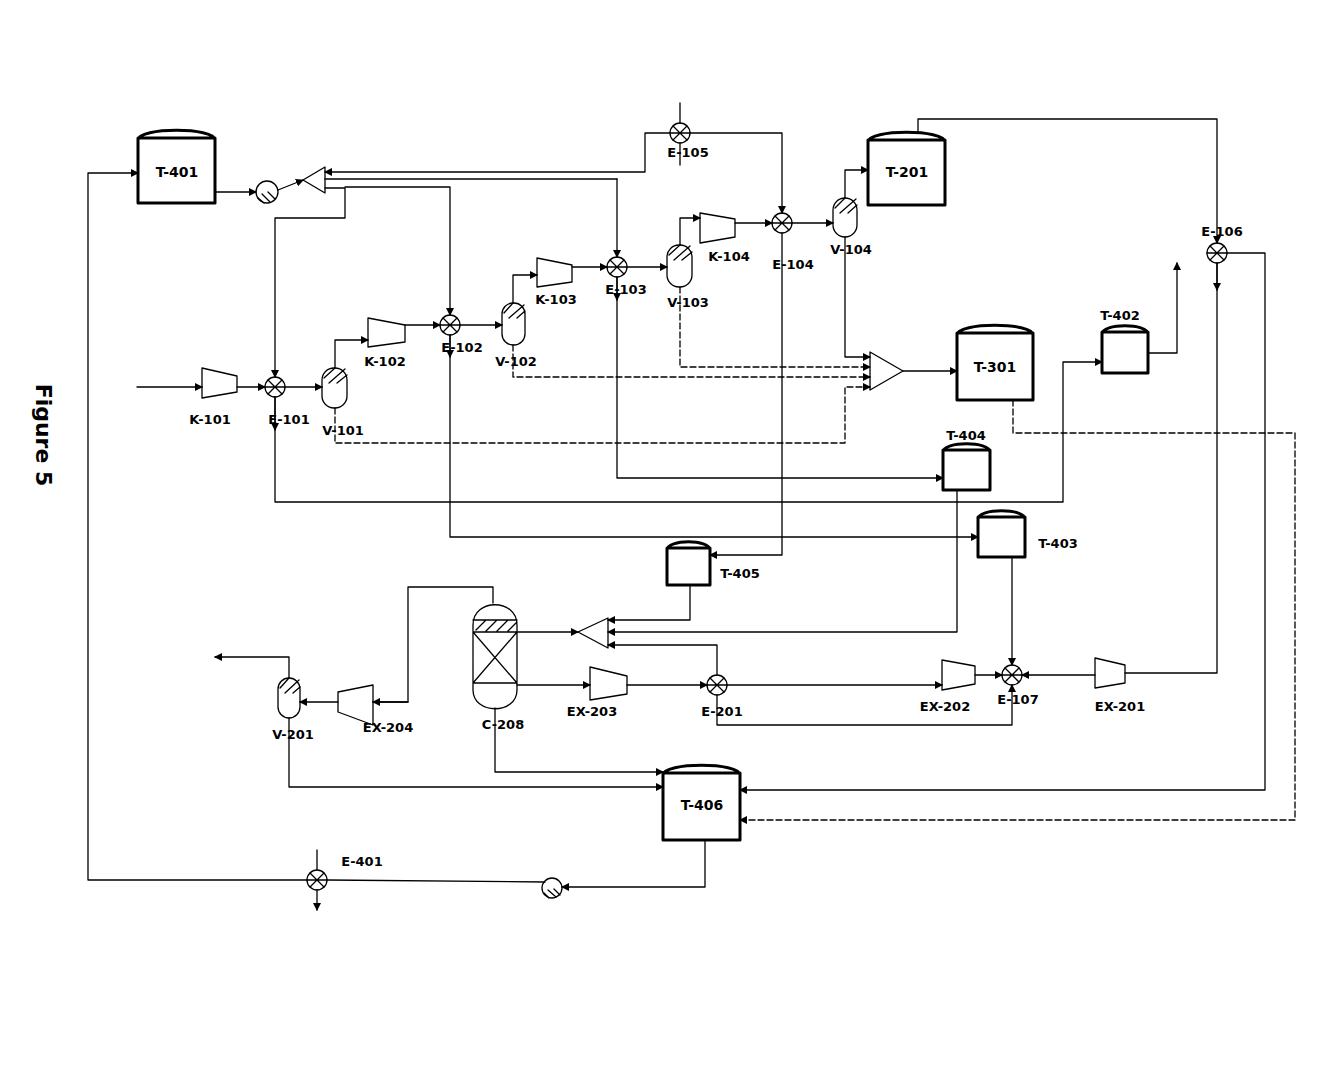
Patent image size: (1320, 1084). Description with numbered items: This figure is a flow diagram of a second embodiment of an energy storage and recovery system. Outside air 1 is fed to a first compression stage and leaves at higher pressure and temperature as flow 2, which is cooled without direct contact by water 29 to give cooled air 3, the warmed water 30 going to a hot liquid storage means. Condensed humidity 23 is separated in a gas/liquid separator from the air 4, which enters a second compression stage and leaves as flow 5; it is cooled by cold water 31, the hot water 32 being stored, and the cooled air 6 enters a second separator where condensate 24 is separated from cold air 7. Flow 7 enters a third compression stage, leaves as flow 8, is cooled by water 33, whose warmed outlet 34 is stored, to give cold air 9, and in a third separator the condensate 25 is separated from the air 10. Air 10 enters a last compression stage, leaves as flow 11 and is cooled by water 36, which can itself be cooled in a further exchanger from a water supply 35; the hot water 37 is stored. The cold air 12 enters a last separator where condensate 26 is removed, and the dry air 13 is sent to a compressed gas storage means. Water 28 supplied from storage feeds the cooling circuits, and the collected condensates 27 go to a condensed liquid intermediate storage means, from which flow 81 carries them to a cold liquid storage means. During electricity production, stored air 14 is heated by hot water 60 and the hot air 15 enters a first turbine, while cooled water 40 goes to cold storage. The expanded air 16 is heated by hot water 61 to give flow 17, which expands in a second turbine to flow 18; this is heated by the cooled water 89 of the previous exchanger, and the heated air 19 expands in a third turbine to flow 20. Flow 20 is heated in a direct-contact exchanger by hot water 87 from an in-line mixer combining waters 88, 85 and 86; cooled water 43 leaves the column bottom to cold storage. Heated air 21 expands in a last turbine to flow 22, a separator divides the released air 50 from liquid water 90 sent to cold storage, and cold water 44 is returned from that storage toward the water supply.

The outside air flow 1 is at (177, 387).
The compressed air flow 2 is at (248, 387).
The cooled air flow 3 is at (302, 387).
The separated air flow 4 is at (348, 340).
The compressed air flow 5 is at (423, 325).
The cooled air flow 6 is at (483, 325).
The cold air flow 7 is at (516, 275).
The compressed air flow 8 is at (588, 267).
The cooled stream from E-103 to V-103 9 is at (648, 267).
The cold air flow 10 is at (687, 218).
The compressed air flow 11 is at (753, 223).
The cold air flow 12 is at (808, 223).
The dry cold air flow 13 is at (847, 170).
The stored air flow 14 is at (1105, 119).
The hot air flow 15 is at (1217, 533).
The expanded air flow 16 is at (1063, 675).
The heated air flow 17 is at (987, 675).
The expanded air flow 18 is at (895, 685).
The heated air flow 19 is at (662, 685).
The cold expanded air flow 20 is at (568, 685).
The heated air flow 21 is at (468, 587).
The expanded air flow 22 is at (322, 702).
The condensed humidity flow 23 is at (393, 443).
The condensed humidity flow 24 is at (568, 377).
The condensed humidity flow 25 is at (752, 367).
The condensed humidity flow 26 is at (845, 295).
The mixed liquid stream to T-301 27 is at (922, 371).
The stream from T-401 to mixer 28 is at (245, 192).
The cooling water flow 29 is at (275, 263).
The hot water flow 30 is at (275, 485).
The cold water flow 31 is at (450, 227).
The hot water flow 32 is at (450, 382).
The cold water flow 33 is at (617, 200).
The hot water flow 34 is at (617, 420).
The stream from E-105 to splitter 35 is at (542, 172).
The cold water flow 36 is at (743, 133).
The hot water flow 37 is at (782, 408).
The cooled water flow 40 is at (1080, 790).
The cooled water flow 43 is at (495, 763).
The stream from T-406 through E-401 to T-401 44 is at (277, 880).
The released air flow 50 is at (245, 657).
The hot water flow 60 is at (1170, 353).
The hot water flow 61 is at (1012, 595).
The condensation water flow 81 is at (1287, 433).
The hot water flow 85 is at (910, 632).
The hot water flow 86 is at (652, 620).
The mixed hot water flow 87 is at (538, 632).
The hot water flow 88 is at (717, 665).
The cooled water flow 89 is at (935, 725).
The liquid water flow 90 is at (289, 778).